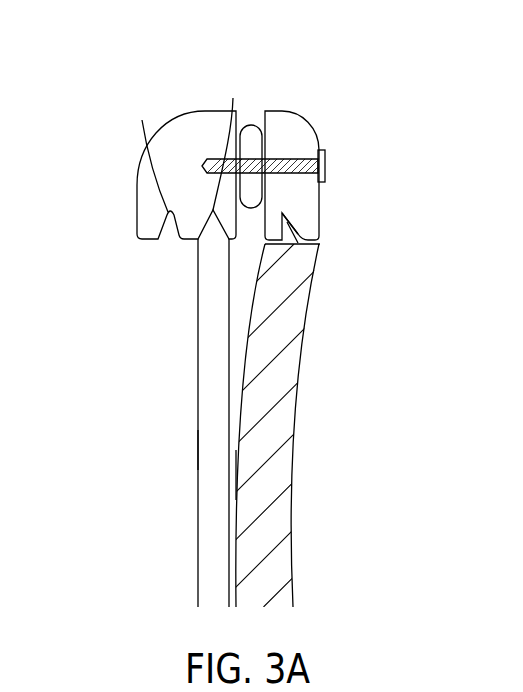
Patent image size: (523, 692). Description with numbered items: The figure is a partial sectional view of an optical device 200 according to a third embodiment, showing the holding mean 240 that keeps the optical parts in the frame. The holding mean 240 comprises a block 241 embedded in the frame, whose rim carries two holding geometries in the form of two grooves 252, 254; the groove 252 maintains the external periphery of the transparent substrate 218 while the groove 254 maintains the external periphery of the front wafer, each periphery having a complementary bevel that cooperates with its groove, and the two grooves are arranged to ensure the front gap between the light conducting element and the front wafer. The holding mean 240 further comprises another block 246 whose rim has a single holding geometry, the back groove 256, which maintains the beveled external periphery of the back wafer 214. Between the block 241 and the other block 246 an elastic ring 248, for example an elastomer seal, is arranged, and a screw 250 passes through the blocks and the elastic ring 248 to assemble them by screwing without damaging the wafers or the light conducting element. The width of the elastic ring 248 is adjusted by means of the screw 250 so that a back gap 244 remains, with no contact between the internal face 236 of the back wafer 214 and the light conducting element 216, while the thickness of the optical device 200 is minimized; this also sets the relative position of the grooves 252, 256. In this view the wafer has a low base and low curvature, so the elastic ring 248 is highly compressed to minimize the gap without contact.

The optical device 200 is at (118, 128).
The holding mean 240 is at (185, 102).
The block 241 is at (152, 207).
The other block 246 is at (292, 132).
The back groove 256 is at (283, 212).
The groove 254 is at (142, 121).
The groove 252 is at (233, 100).
The elastic ring 248 is at (253, 125).
The screw 250 is at (327, 160).
The transparent substrate 218 is at (213, 263).
The light conducting element 216 is at (212, 447).
The back wafer 214 is at (282, 298).
The internal face 236 is at (235, 472).
The back gap 244 is at (246, 251).